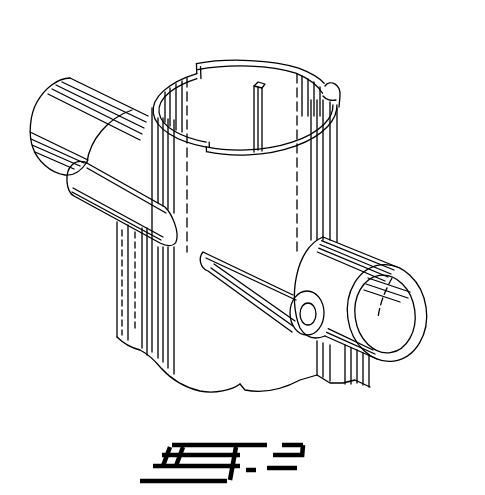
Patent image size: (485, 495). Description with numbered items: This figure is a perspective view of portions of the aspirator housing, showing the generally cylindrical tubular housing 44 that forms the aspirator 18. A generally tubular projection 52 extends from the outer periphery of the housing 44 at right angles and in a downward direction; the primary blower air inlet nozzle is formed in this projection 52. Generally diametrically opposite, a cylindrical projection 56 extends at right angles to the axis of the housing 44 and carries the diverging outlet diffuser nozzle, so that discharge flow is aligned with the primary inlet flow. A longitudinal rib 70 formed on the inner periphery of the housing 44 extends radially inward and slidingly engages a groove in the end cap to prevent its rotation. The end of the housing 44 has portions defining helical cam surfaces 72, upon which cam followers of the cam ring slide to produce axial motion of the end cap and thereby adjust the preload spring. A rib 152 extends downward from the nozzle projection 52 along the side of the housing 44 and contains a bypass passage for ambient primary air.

The aspirator 18 is at (357, 233).
The tubular housing 44 is at (339, 172).
The tubular projection 52 is at (390, 357).
The cylindrical projection 56 is at (108, 97).
The longitudinal rib 70 is at (256, 84).
The helical cam surfaces 72 is at (228, 60).
The rib 152 is at (360, 373).